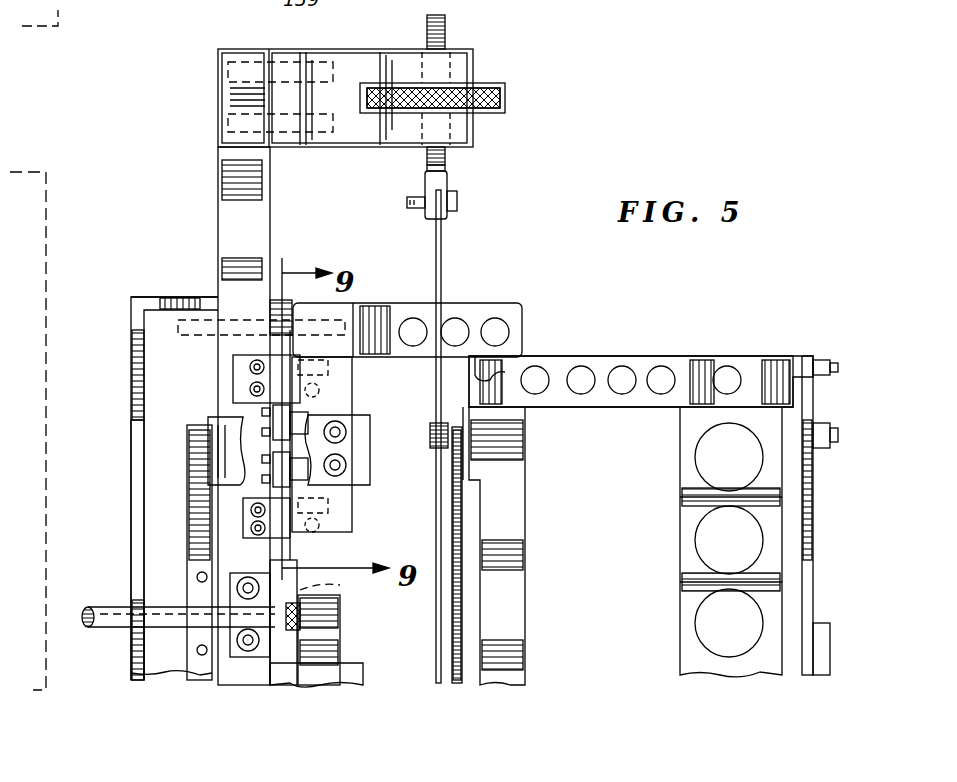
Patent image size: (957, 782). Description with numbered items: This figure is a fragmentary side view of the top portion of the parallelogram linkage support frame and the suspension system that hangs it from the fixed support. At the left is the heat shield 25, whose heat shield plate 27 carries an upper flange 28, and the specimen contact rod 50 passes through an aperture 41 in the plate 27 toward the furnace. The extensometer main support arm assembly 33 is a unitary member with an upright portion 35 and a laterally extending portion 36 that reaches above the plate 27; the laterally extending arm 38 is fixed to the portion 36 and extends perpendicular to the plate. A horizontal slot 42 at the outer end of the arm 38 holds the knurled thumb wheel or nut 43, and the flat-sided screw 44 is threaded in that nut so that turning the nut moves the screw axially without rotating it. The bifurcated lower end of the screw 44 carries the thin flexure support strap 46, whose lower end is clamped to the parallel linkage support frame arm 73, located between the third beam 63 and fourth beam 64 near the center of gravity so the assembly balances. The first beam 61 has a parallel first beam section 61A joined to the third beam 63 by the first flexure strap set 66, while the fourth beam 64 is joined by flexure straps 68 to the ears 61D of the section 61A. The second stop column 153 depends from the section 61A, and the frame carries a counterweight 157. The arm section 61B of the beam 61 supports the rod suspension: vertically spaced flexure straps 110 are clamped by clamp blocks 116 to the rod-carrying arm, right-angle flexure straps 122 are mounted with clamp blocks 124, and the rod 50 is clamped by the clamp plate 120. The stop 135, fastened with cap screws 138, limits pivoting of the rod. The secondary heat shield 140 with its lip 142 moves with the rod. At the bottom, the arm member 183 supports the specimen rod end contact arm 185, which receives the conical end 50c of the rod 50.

The heat shield 25 is at (128, 352).
The heat shield plate 27 is at (130, 452).
The upper flange 28 is at (160, 297).
The extensometer main support arm assembly 33 is at (214, 90).
The upright portion 35 is at (240, 170).
The laterally extending portion 36 is at (255, 58).
The laterally extending arm 38 is at (330, 60).
The aperture 41 is at (457, 200).
The horizontal slot 42 is at (475, 86).
The knurled thumb wheel or nut 43 is at (505, 97).
The screw 44 is at (447, 28).
The flexure support strap 46 is at (442, 238).
The specimen contact rod 50 is at (112, 630).
The conical end 50c is at (333, 605).
The first beam 61 is at (708, 357).
The first beam section 61A is at (598, 356).
The arm section 61B is at (470, 303).
The ears 61D is at (480, 368).
The third beam 63 is at (815, 520).
The fourth beam 64 is at (465, 514).
The first flexure strap set 66 is at (818, 408).
The flexure straps 68 is at (470, 416).
The parallel linkage support frame arm 73 is at (505, 620).
The flexure straps 110 is at (290, 330).
The clamp blocks 116 is at (245, 370).
The clamp plate 120 is at (250, 660).
The flexure straps 122 is at (300, 430).
The clamp blocks 124 is at (282, 420).
The stop 135 is at (215, 430).
The cap screws 138 is at (348, 435).
The secondary heat shield 140 is at (195, 572).
The lip 142 is at (212, 690).
The second stop column 153 is at (680, 556).
The counterweight 157 is at (822, 648).
The arm member 183 is at (330, 670).
The specimen rod end contact arm 185 is at (320, 622).